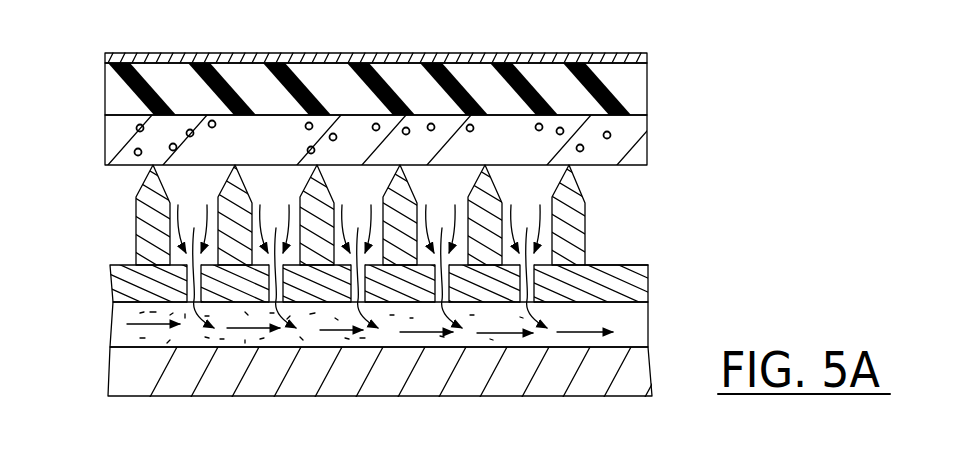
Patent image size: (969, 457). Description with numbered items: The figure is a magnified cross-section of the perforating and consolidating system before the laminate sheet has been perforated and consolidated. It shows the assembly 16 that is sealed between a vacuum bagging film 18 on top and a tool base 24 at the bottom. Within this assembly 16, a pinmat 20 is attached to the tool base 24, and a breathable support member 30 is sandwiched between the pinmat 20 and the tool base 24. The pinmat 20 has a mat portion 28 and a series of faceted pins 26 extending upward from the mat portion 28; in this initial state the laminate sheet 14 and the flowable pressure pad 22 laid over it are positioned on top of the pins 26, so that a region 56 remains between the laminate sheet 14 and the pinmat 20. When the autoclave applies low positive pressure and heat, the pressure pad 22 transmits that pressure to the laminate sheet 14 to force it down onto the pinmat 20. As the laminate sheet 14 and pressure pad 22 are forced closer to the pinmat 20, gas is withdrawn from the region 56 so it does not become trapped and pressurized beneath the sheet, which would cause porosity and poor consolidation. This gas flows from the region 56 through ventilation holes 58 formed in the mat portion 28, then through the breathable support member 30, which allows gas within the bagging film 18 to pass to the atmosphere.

The laminate sheet 14 is at (638, 129).
The assembly 16 is at (112, 235).
The vacuum bagging film 18 is at (421, 52).
The pinmat 20 is at (651, 263).
The flowable pressure pad 22 is at (638, 85).
The tool base 24 is at (382, 392).
The pins 26 is at (307, 177).
The mat portion 28 is at (617, 263).
The breathable support member 30 is at (108, 332).
The region 56 is at (353, 190).
The ventilation holes 58 is at (520, 303).